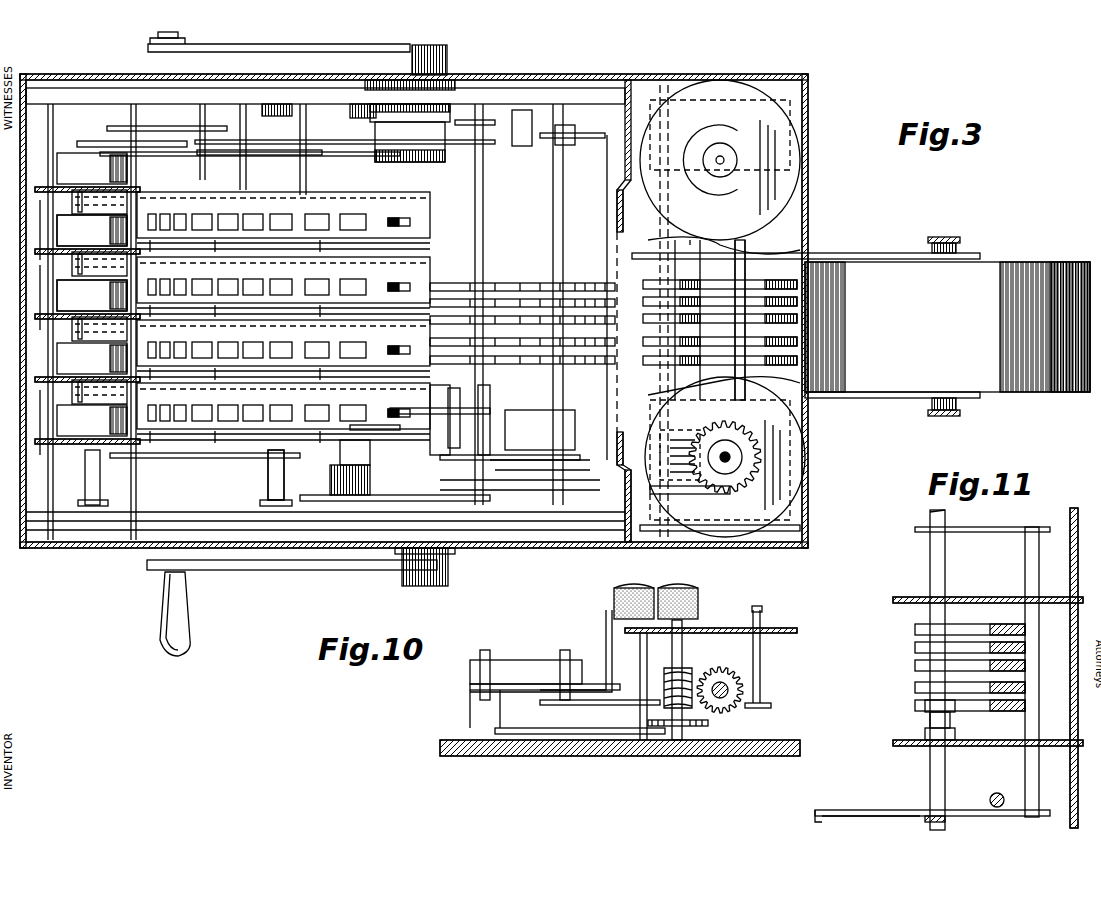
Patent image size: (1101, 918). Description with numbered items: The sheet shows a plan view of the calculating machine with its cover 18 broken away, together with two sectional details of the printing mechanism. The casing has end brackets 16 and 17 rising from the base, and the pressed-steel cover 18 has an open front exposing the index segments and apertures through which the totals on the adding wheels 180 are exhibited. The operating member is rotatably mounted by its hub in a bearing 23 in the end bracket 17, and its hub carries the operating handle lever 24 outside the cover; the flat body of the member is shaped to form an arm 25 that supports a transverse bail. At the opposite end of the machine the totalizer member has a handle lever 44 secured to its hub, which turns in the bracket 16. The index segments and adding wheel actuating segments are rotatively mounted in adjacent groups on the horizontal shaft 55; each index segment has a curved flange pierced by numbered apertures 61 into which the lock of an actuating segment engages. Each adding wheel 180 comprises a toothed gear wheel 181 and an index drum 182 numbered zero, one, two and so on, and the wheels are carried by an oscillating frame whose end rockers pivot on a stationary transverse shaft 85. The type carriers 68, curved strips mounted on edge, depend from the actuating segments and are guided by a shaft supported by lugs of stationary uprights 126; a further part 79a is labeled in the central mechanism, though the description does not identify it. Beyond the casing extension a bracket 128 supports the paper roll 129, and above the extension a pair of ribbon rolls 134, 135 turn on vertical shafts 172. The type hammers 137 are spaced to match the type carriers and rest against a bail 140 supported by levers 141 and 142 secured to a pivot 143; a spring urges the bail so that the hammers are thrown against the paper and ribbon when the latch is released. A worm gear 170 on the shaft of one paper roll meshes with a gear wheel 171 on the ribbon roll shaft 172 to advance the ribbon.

In FIG. 3, the end bracket 16 is at (508, 106).
In FIG. 3, the end bracket 17 is at (538, 522).
In FIG. 10, the end bracket 17 is at (752, 750).
In FIG. 3, the cover 18 is at (570, 80).
In FIG. 3, the bearing 23 is at (372, 522).
In FIG. 3, the operating handle lever 24 is at (298, 572).
In FIG. 3, the arm 25 is at (372, 465).
In FIG. 3, the handle lever 44 is at (242, 40).
In FIG. 3, the horizontal shaft 55 is at (424, 158).
In FIG. 3, the apertures 61 is at (355, 284).
In FIG. 3, the type carriers 68 is at (507, 292).
In FIG. 3, the actuating rod 79a is at (482, 412).
In FIG. 3, the stationary transverse shaft 85 is at (272, 482).
In FIG. 11, the stationary uprights 126 is at (898, 743).
In FIG. 3, the bracket 128 is at (856, 252).
In FIG. 3, the paper roll 129 is at (1028, 385).
In FIG. 3, the ribbon roll 134 is at (785, 455).
In FIG. 3, the ribbon roll 135 is at (785, 148).
In FIG. 3, the type hammers 137 is at (755, 300).
In FIG. 11, the type hammers 137 is at (1008, 630).
In FIG. 3, the bail 140 is at (760, 268).
In FIG. 11, the bail 140 is at (1038, 572).
In FIG. 11, the lever 141 is at (995, 530).
In FIG. 11, the lever 142 is at (1020, 814).
In FIG. 11, the pivot 143 is at (932, 774).
In FIG. 10, the worm gear 170 is at (685, 670).
In FIG. 10, the gear wheel 171 is at (725, 672).
In FIG. 10, the vertical shafts 172 is at (730, 690).
In FIG. 11, the vertical shafts 172 is at (990, 800).
In FIG. 3, the adding wheels 180 is at (45, 239).
In FIG. 3, the toothed gear wheel 181 is at (35, 250).
In FIG. 3, the index drum 182 is at (60, 222).